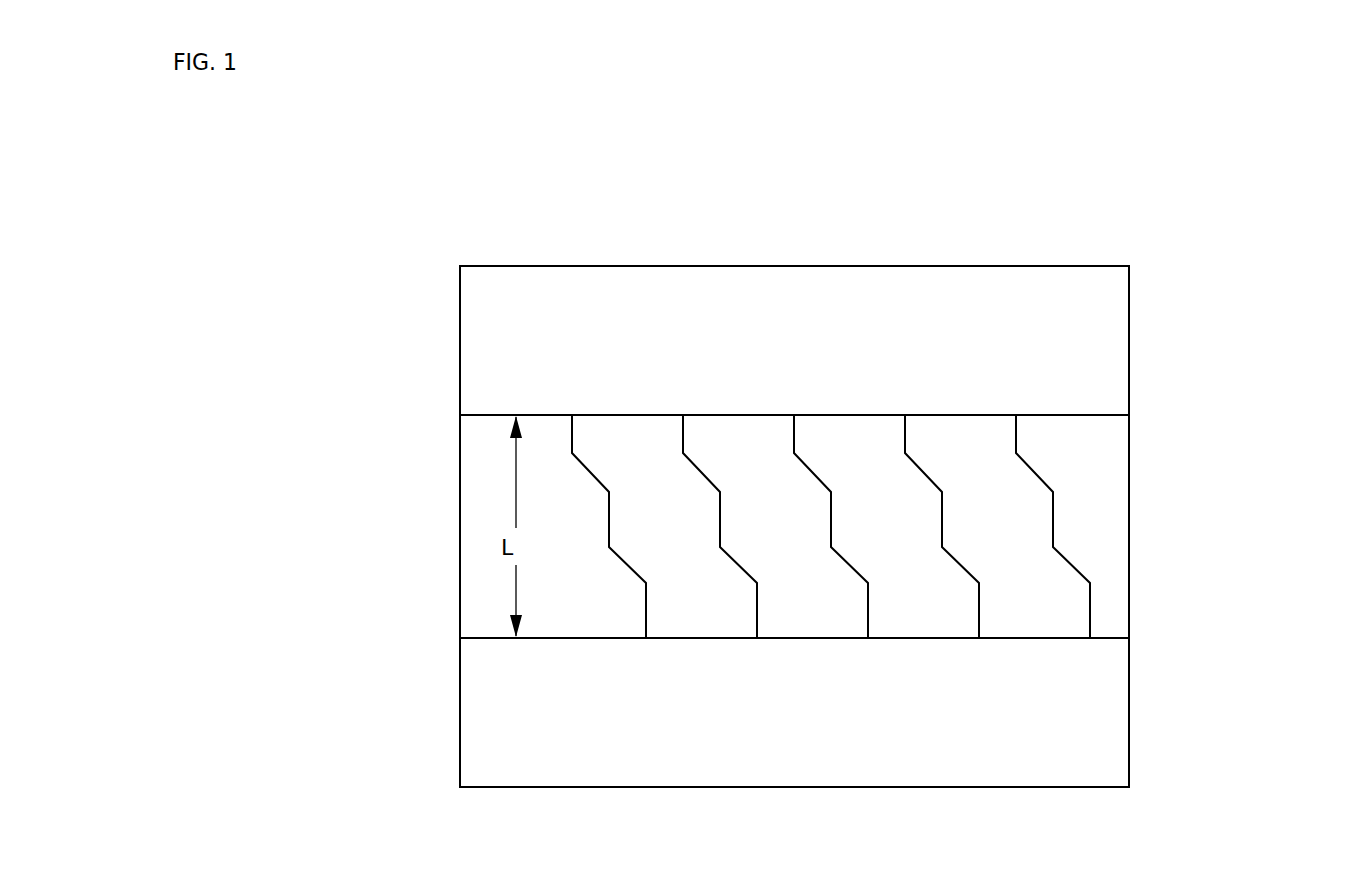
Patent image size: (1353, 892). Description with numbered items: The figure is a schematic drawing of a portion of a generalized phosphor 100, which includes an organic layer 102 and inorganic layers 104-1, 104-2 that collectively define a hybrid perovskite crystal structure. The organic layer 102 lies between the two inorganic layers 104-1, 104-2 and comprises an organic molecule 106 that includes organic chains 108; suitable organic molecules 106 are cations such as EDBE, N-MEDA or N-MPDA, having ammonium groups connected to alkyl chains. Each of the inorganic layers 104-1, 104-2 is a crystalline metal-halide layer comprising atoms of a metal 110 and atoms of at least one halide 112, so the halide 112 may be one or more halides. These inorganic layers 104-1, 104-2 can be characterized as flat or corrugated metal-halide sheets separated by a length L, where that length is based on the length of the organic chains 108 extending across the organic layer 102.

The phosphor 100 is at (365, 155).
The organic layer 102 is at (422, 527).
The inorganic layer 104-1 is at (385, 302).
The inorganic layer 104-2 is at (418, 712).
The organic molecule 106 is at (1130, 452).
The organic chains 108 is at (1057, 517).
The metal 110 is at (562, 317).
The halide 112 is at (711, 369).